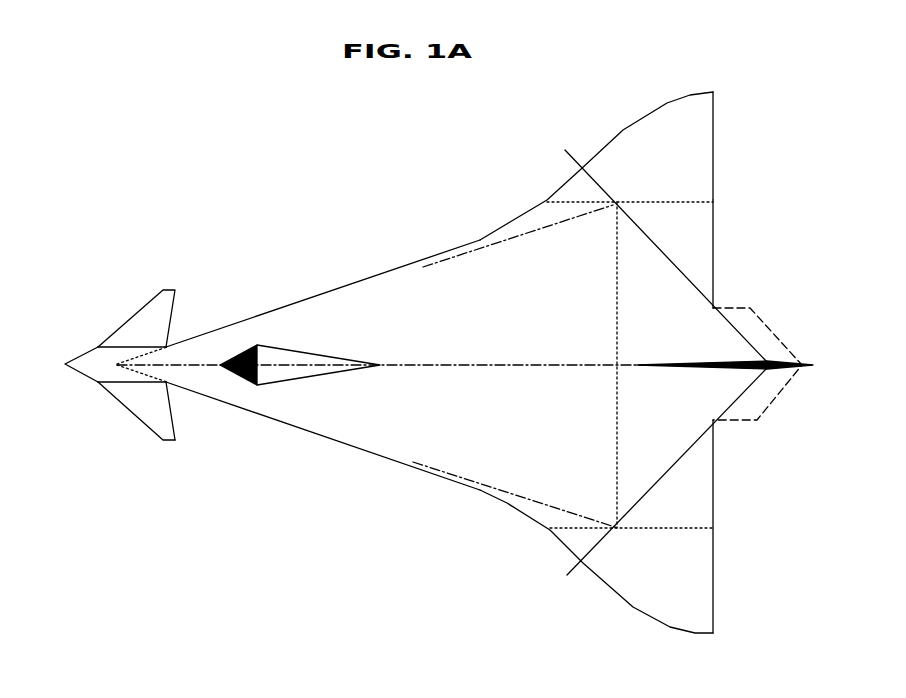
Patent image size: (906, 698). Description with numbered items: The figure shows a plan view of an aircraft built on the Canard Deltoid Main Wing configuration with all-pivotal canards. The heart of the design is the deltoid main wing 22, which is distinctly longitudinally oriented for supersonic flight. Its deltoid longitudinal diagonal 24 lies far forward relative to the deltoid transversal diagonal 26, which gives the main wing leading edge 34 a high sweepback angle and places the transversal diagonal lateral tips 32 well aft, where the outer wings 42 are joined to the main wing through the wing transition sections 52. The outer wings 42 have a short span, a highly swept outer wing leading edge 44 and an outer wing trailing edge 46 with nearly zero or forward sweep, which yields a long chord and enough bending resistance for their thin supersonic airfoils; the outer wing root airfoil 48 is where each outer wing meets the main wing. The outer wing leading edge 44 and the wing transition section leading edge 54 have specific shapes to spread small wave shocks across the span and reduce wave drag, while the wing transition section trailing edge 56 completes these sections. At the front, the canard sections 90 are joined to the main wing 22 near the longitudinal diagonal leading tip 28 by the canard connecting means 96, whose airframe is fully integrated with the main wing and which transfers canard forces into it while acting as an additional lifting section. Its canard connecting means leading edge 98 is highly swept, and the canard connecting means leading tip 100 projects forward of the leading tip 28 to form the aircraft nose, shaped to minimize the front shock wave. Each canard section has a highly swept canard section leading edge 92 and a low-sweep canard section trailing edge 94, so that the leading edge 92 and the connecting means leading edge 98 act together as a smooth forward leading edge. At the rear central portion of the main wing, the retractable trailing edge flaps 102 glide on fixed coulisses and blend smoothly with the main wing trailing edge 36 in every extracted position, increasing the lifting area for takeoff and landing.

The deltoid main wing 22 is at (267, 403).
The deltoid longitudinal diagonal 24 is at (190, 364).
The deltoid transversal diagonal 26 is at (617, 390).
The longitudinal diagonal leading tip 28 is at (117, 365).
The transversal diagonal lateral tips 32 is at (654, 363).
The main wing leading edge 34 is at (270, 317).
The main wing trailing edge 36 is at (733, 318).
The outer wings 42 is at (648, 147).
The outer wing leading edge 44 is at (633, 605).
The outer wing trailing edge 46 is at (715, 590).
The outer wing root airfoil 48 is at (693, 200).
The wing transition sections 52 is at (540, 218).
The wing transition section leading edge 54 is at (512, 502).
The wing transition section trailing edge 56 is at (715, 257).
The canard sections 90 is at (142, 320).
The canard section leading edge 92 is at (125, 407).
The canard section trailing edge 94 is at (177, 425).
The canard connecting means 96 is at (96, 370).
The canard connecting means leading edge 98 is at (80, 352).
The canard connecting means leading tip 100 is at (67, 364).
The retractable trailing edge flaps 102 is at (767, 327).